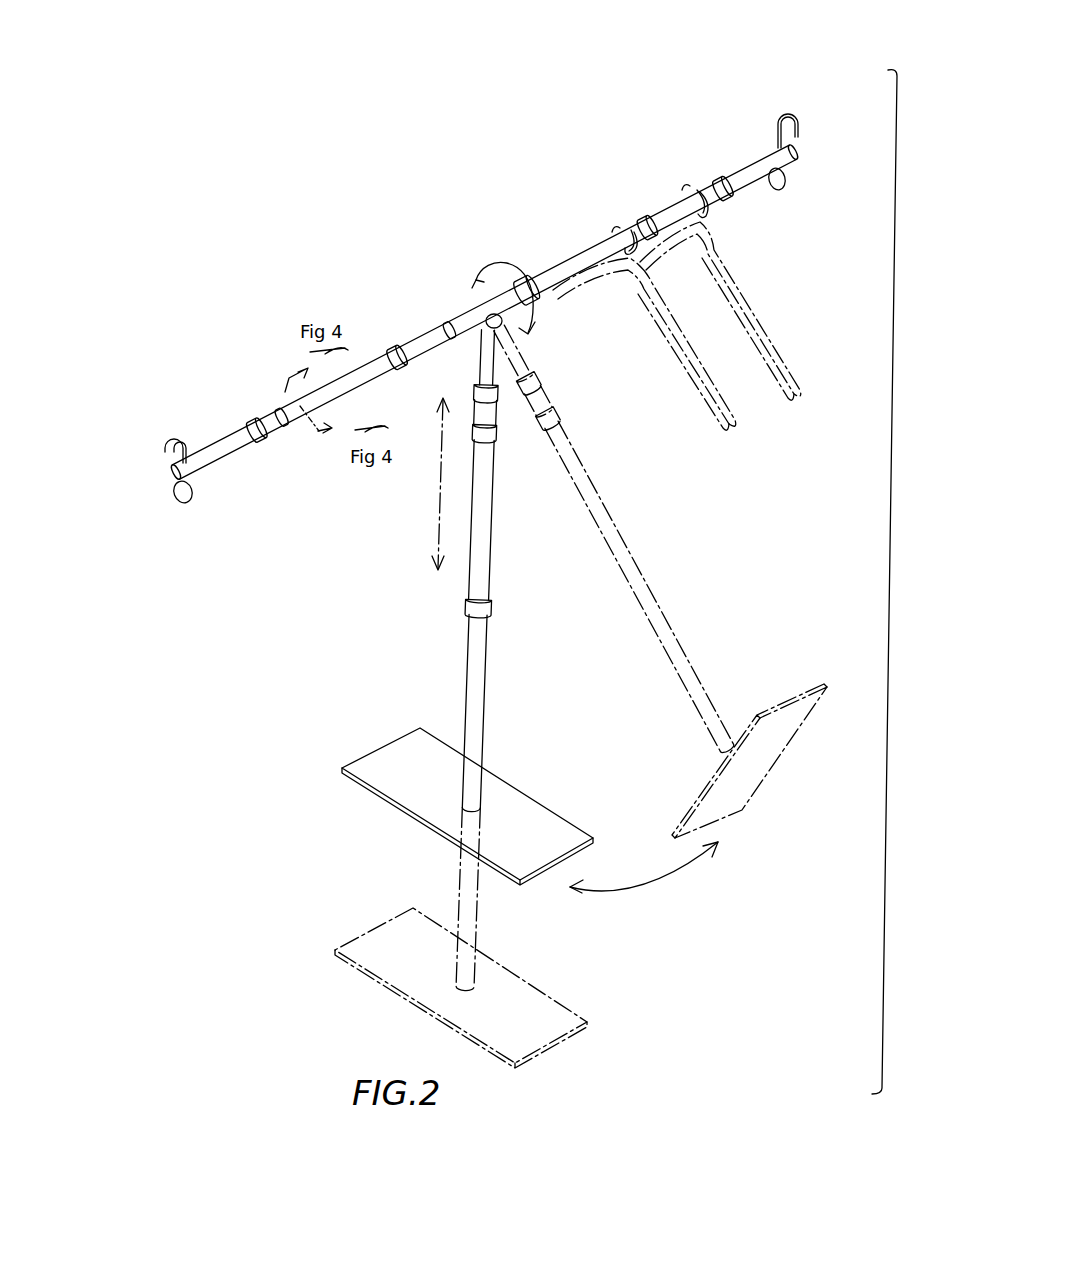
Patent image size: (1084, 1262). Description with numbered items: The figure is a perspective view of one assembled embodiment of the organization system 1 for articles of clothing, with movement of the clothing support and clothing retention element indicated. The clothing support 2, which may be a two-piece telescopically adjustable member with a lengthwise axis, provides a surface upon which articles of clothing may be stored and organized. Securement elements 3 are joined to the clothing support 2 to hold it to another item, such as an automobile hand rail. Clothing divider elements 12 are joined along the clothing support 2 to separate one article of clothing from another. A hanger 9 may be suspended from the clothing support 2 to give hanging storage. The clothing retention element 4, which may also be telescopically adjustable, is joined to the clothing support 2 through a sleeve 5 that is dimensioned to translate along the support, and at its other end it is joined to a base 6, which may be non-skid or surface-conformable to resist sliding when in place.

The organization system 1 is at (892, 532).
The clothing support 2 is at (170, 482).
The securement element 3 is at (157, 436).
The clothing retention element 4 is at (458, 657).
The sleeve 5 is at (467, 293).
The base 6 is at (375, 815).
The hanger 9 is at (690, 412).
The clothing divider element 12 is at (271, 446).